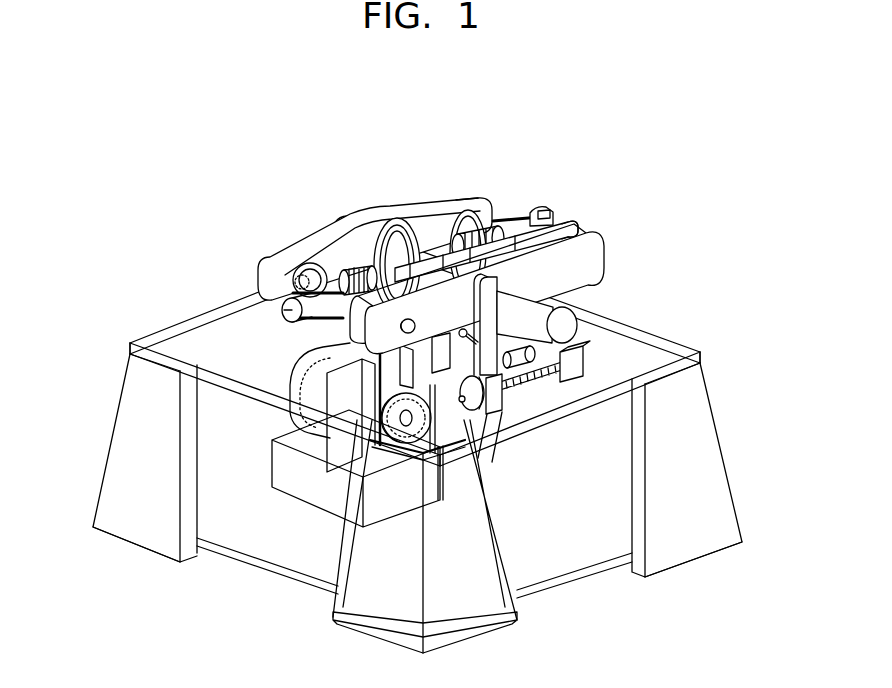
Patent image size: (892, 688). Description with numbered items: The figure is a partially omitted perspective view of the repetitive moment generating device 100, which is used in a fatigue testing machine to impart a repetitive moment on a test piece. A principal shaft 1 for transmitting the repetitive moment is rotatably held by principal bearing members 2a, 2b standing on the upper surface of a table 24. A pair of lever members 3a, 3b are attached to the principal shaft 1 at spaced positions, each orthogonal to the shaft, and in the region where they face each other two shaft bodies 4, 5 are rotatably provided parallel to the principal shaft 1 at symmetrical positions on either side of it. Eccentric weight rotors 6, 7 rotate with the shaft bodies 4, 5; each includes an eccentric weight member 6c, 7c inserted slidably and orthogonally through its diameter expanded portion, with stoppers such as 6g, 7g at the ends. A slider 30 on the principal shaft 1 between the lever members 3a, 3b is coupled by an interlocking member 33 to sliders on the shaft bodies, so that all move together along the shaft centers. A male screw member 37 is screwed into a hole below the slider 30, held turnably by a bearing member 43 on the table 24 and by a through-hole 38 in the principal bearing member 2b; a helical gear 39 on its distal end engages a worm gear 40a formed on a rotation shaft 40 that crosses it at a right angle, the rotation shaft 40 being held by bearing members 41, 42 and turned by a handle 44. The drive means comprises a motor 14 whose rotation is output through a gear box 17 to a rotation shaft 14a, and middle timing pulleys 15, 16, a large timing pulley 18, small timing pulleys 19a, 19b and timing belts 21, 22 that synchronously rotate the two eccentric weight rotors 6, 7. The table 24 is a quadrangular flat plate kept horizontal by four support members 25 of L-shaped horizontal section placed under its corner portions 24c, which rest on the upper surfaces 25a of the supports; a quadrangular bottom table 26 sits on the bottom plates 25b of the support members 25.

The repetitive moment generating device 100 is at (172, 180).
The principal shaft 1 is at (342, 217).
The principal bearing member 2a is at (366, 214).
The principal bearing member 2b is at (505, 277).
The lever member 3a is at (270, 257).
The lever member 3b is at (609, 260).
The shaft body 4 is at (265, 278).
The shaft body 5 is at (477, 198).
The eccentric weight rotor 6 is at (322, 275).
The eccentric weight member 6c is at (282, 311).
The stopper 6g is at (290, 324).
The eccentric weight rotor 7 is at (512, 218).
The eccentric weight member 7c is at (548, 207).
The stopper 7g is at (552, 215).
The motor 14 is at (300, 490).
The rotation shaft 14a is at (400, 455).
The middle timing pulley 15 is at (446, 462).
The middle timing pulley 16 is at (430, 214).
The gear box 17 is at (345, 470).
The large timing pulley 18 is at (418, 206).
The small timing pulley 19a is at (300, 262).
The small timing pulley 19b is at (495, 213).
The timing belt 21 is at (397, 218).
The timing belt 22 is at (452, 200).
The table 24 is at (210, 305).
The corner portion 24c is at (140, 340).
The support member 25 is at (112, 432).
The upper surface 25a is at (175, 320).
The bottom plate 25b is at (195, 565).
The bottom table 26 is at (563, 600).
The slider 30 is at (455, 352).
The interlocking member 33 is at (579, 229).
The male screw member 37 is at (463, 330).
The through-hole 38 is at (545, 302).
The helical gear 39 is at (545, 358).
The rotation shaft 40 is at (535, 402).
The worm gear 40a is at (565, 393).
The bearing member 41 is at (515, 405).
The bearing member 42 is at (585, 366).
The bearing member 43 is at (458, 400).
The handle 44 is at (496, 422).